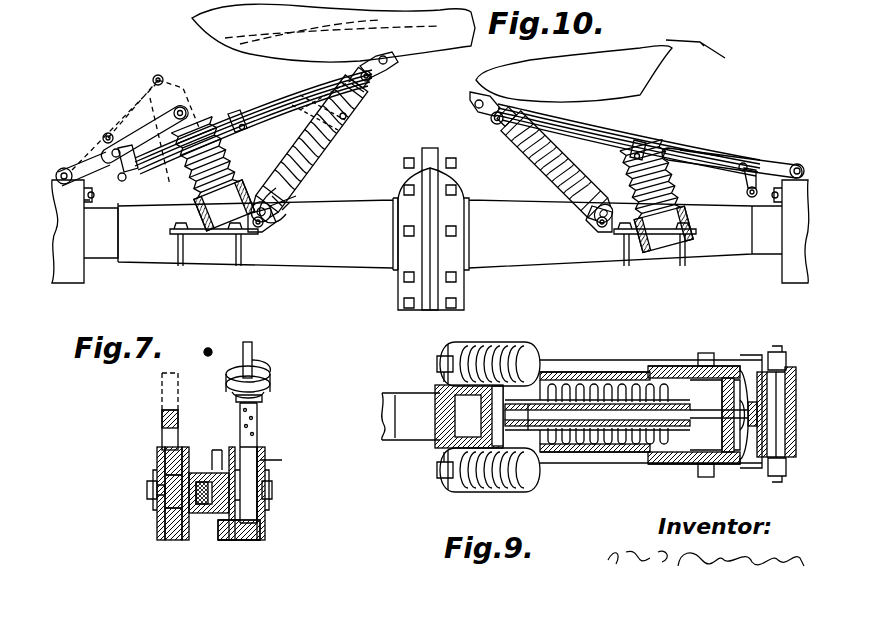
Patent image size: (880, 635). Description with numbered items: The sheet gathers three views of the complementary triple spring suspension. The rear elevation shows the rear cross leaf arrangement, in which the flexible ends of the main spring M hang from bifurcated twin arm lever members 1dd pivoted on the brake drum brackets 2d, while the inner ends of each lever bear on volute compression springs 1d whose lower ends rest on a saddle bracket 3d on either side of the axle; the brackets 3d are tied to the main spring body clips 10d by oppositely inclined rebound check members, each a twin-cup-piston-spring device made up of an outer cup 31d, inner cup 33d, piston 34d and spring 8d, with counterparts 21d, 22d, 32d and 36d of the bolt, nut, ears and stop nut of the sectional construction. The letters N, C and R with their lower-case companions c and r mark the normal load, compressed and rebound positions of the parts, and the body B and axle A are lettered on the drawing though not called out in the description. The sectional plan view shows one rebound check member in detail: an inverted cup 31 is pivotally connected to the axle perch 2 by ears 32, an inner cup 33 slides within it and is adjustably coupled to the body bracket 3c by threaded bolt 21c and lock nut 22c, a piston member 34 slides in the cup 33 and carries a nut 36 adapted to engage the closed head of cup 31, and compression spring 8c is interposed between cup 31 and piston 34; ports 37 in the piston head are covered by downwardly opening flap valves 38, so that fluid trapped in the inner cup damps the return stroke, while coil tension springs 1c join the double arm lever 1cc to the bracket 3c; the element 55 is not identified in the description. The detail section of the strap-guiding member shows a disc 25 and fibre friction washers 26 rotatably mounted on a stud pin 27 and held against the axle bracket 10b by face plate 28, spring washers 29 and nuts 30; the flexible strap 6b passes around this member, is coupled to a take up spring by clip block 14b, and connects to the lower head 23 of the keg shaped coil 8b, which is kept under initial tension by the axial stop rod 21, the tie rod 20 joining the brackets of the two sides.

In FIG. 10, the vehicle body B is at (458, 53).
In FIG. 10, the rebound position R is at (448, 33).
In FIG. 10, the axle A is at (430, 229).
In FIG. 10, the main spring M is at (252, 112).
In FIG. 9, the main spring M is at (422, 428).
In FIG. 10, the normal load position N is at (400, 62).
In FIG. 10, the compressed position C is at (476, 100).
In FIG. 10, the compressed position marker c is at (365, 118).
In FIG. 10, the rebound position marker r is at (164, 80).
In FIG. 10, the twin arm lever member 1dd is at (138, 135).
In FIG. 10, the volute compression spring 1d is at (200, 180).
In FIG. 10, the brake drum bracket 2d is at (92, 205).
In FIG. 10, the saddle bracket 3d is at (214, 232).
In FIG. 10, the rebound check spring 8d is at (312, 146).
In FIG. 10, the main spring body clip 10d is at (390, 62).
In FIG. 10, the piston rod 21d is at (350, 100).
In FIG. 10, the pivot bracket 22d is at (284, 236).
In FIG. 10, the outer cup 31d is at (300, 160).
In FIG. 10, the lower pivot eye 32d is at (298, 218).
In FIG. 10, the inner cup 33d is at (322, 138).
In FIG. 10, the piston 34d is at (292, 192).
In FIG. 10, the upper pivot pin 36d is at (346, 118).
In FIG. 7, the tie rod 20 is at (210, 350).
In FIG. 7, the axial stop rod 21 is at (250, 356).
In FIG. 7, the keg shaped coil 8b is at (266, 372).
In FIG. 7, the lower head 23 is at (240, 415).
In FIG. 7, the axle bracket 10b is at (228, 455).
In FIG. 7, the flexible strap 6b is at (165, 440).
In FIG. 7, the face plate 28 is at (160, 462).
In FIG. 7, the disc 25 is at (246, 464).
In FIG. 7, the stud pin 27 is at (170, 488).
In FIG. 7, the nut 30 is at (146, 491).
In FIG. 7, the spring washer 29 is at (155, 506).
In FIG. 7, the fibre friction washer 26 is at (166, 520).
In FIG. 7, the clip block 14b is at (246, 528).
In FIG. 9, the body bracket 3c is at (438, 400).
In FIG. 9, the coil tension spring 1c is at (490, 344).
In FIG. 9, the double arm lever 1cc is at (558, 362).
In FIG. 9, the helical spring 55 is at (606, 390).
In FIG. 9, the piston member 34 is at (672, 368).
In FIG. 9, the lock nut 22c is at (756, 372).
In FIG. 9, the arm or ear 32 is at (788, 352).
In FIG. 9, the axle perch 2 is at (796, 405).
In FIG. 9, the flap valve 38 is at (684, 404).
In FIG. 9, the nut 36 is at (512, 490).
In FIG. 9, the inverted cup 31 is at (552, 456).
In FIG. 9, the compression spring 8c is at (580, 440).
In FIG. 9, the threaded bolt 21c is at (612, 428).
In FIG. 9, the inner cup 33 is at (640, 456).
In FIG. 9, the port 37 is at (684, 456).